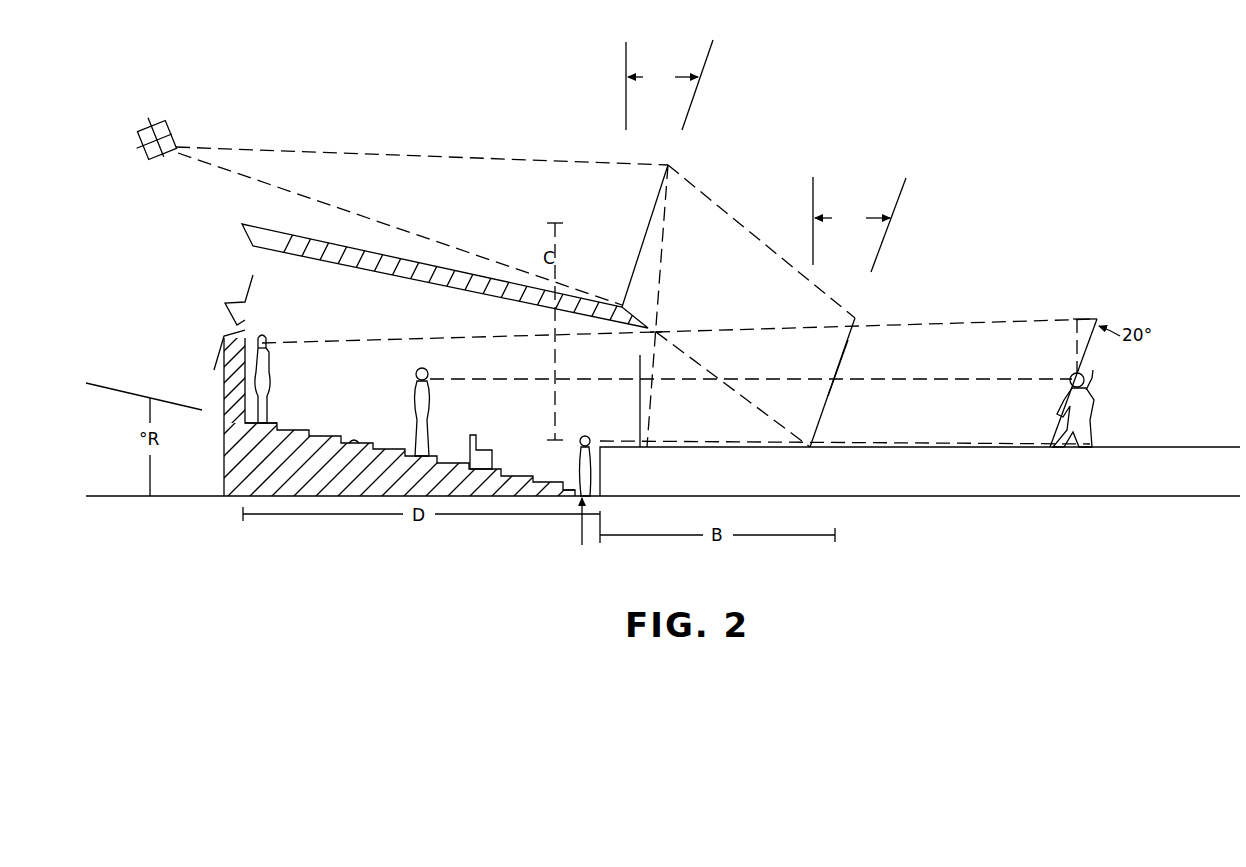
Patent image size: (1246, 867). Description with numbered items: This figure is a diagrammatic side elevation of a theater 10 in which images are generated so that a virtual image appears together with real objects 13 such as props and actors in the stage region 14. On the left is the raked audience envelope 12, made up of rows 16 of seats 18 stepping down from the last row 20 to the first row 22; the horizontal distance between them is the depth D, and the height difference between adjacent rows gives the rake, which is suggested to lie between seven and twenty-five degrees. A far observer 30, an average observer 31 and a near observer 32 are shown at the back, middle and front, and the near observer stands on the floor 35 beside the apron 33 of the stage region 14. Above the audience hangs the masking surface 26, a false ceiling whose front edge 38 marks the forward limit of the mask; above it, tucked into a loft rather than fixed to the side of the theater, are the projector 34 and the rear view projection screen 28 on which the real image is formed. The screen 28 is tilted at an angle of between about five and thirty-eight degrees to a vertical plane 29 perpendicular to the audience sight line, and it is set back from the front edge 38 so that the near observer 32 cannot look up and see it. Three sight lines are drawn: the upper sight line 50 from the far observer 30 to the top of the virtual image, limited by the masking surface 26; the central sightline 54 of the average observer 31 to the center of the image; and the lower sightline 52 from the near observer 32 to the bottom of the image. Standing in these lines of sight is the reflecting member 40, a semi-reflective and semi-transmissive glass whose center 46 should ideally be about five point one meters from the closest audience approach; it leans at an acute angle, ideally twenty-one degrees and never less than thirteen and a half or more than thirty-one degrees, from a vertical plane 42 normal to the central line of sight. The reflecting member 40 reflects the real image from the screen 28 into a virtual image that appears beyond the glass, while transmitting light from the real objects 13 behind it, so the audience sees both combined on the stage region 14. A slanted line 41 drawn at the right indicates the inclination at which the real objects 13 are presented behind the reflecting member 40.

The theater 10 is at (1005, 500).
The audience envelope 12 is at (322, 416).
The real objects 13 is at (1092, 410).
The stage region 14 is at (941, 446).
The rows 16 is at (356, 442).
The seats 18 is at (496, 468).
The last row 20 is at (278, 420).
The first row 22 is at (572, 493).
The masking surface 26 is at (475, 270).
The rear view projection screen 28 is at (652, 211).
The vertical plane 29 is at (624, 74).
The far observer 30 is at (269, 371).
The average observer 31 is at (418, 398).
The near observer 32 is at (594, 458).
The apron 33 is at (637, 360).
The projector 34 is at (172, 160).
The floor 35 is at (582, 532).
The front edge 38 is at (659, 329).
The reflecting member 40 is at (828, 404).
The inclined line 41 is at (1098, 340).
The vertical plane 42 is at (811, 204).
The center 46 is at (834, 362).
The upper sight line 50 is at (441, 336).
The lower sightline 52 is at (676, 452).
The central sightline 54 is at (940, 378).